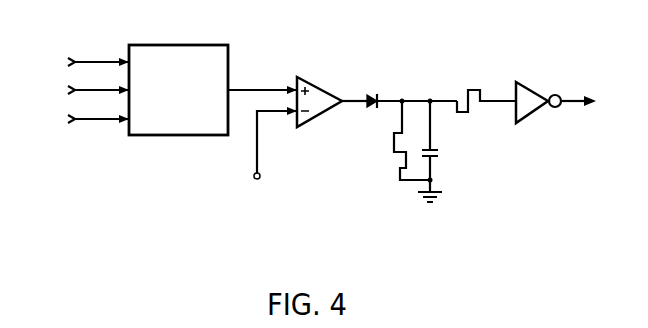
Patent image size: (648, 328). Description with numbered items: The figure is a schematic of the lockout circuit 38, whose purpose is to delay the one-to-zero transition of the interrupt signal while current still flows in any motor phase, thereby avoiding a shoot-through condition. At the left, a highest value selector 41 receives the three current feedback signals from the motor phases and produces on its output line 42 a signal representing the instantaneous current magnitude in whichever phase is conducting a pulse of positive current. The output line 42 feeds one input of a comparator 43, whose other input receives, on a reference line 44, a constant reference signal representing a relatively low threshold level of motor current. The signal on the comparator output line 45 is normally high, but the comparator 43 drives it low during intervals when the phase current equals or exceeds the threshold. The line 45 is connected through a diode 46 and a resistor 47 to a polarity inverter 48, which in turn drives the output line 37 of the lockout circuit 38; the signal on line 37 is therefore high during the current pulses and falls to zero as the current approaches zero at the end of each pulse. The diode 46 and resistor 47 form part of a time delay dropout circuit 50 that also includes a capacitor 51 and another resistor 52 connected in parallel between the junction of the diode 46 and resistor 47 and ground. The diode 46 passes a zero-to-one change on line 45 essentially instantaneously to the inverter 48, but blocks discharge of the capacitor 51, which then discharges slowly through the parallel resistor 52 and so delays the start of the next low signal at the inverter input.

The output line 37 is at (576, 108).
The lockout circuit 38 is at (316, 129).
The highest value selector 41 is at (229, 65).
The output line 42 is at (255, 88).
The comparator 43 is at (320, 83).
The reference line 44 is at (255, 150).
The comparator output line 45 is at (352, 105).
The diode 46 is at (378, 92).
The resistor 47 is at (468, 88).
The polarity inverter 48 is at (535, 86).
The time delay dropout circuit 50 is at (395, 207).
The capacitor 51 is at (441, 153).
The resistor 52 is at (399, 147).